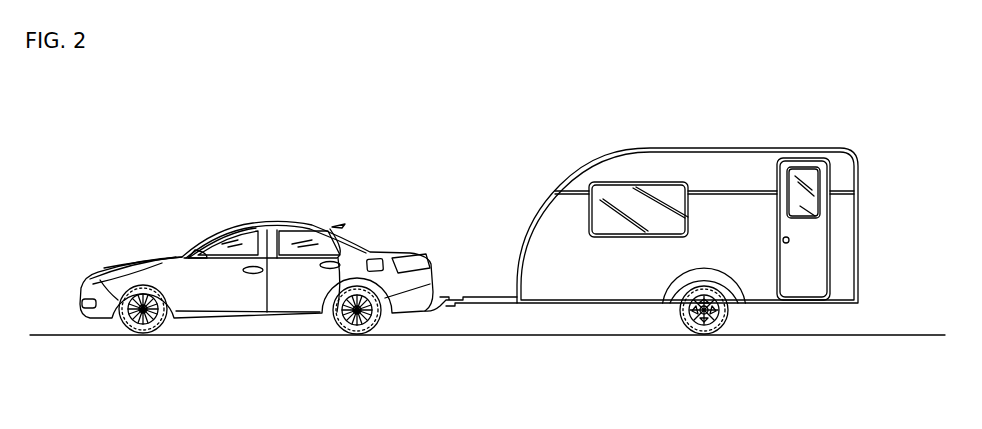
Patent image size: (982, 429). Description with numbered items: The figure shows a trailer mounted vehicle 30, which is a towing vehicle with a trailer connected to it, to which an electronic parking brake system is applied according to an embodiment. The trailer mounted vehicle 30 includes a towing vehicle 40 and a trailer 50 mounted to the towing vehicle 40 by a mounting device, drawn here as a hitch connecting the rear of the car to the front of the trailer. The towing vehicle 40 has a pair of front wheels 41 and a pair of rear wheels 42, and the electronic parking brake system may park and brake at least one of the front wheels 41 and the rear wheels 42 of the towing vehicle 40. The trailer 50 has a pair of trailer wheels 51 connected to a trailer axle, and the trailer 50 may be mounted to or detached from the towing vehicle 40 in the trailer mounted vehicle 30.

The trailer mounted vehicle 30 is at (173, 224).
The towing vehicle 40 is at (300, 226).
The front wheels 41 is at (128, 336).
The rear wheels 42 is at (349, 336).
The trailer 50 is at (703, 147).
The trailer wheels 51 is at (696, 336).